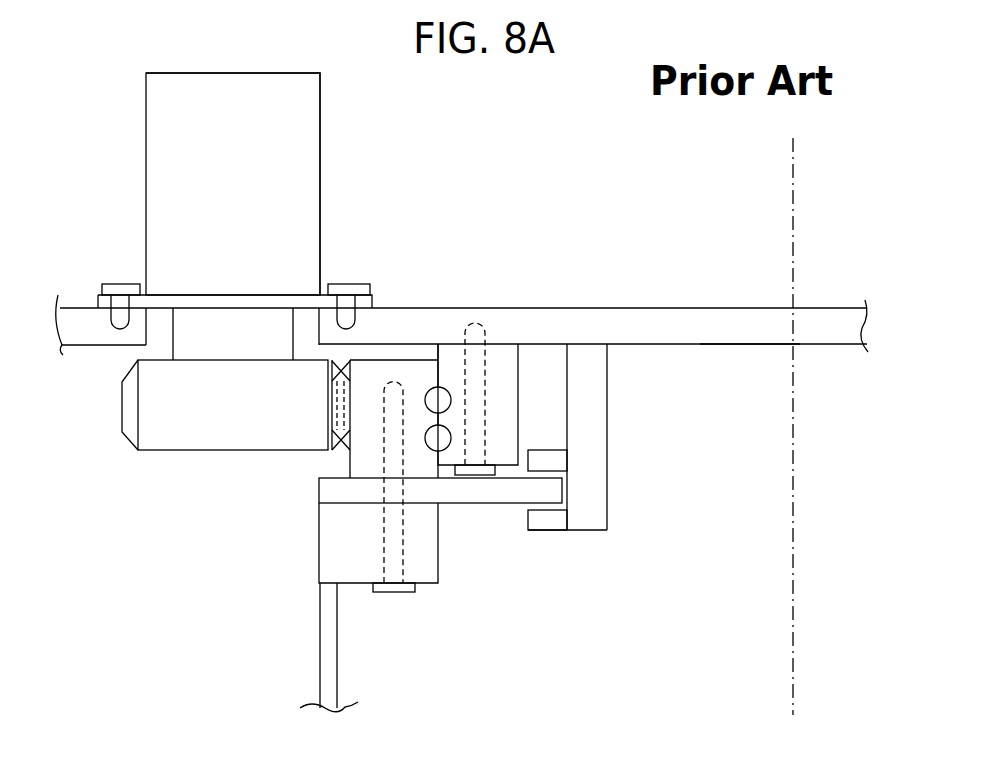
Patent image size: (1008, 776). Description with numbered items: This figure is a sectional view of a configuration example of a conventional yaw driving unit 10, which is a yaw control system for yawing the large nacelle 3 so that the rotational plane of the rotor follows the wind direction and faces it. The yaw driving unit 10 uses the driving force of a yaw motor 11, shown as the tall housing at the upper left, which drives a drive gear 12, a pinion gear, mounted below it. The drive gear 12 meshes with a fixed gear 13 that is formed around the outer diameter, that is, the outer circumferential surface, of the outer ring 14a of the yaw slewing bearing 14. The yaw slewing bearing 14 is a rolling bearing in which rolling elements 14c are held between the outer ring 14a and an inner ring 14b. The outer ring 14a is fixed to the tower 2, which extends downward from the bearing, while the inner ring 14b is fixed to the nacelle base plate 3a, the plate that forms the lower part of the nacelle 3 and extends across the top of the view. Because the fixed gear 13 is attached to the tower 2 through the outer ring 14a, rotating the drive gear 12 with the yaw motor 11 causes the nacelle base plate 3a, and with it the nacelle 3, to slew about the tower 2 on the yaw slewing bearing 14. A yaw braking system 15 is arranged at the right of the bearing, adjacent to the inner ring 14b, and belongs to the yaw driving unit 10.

The tower 2 is at (320, 660).
The nacelle 3 is at (737, 233).
The nacelle base plate 3a is at (830, 344).
The yaw driving unit 10 is at (296, 480).
The yaw motor 11 is at (320, 108).
The drive gear 12 is at (170, 451).
The fixed gear 13 is at (328, 396).
The yaw slewing bearing 14 is at (442, 478).
The outer ring 14a is at (393, 358).
The inner ring 14b is at (520, 367).
The rolling elements 14c is at (428, 387).
The yaw braking system 15 is at (550, 550).